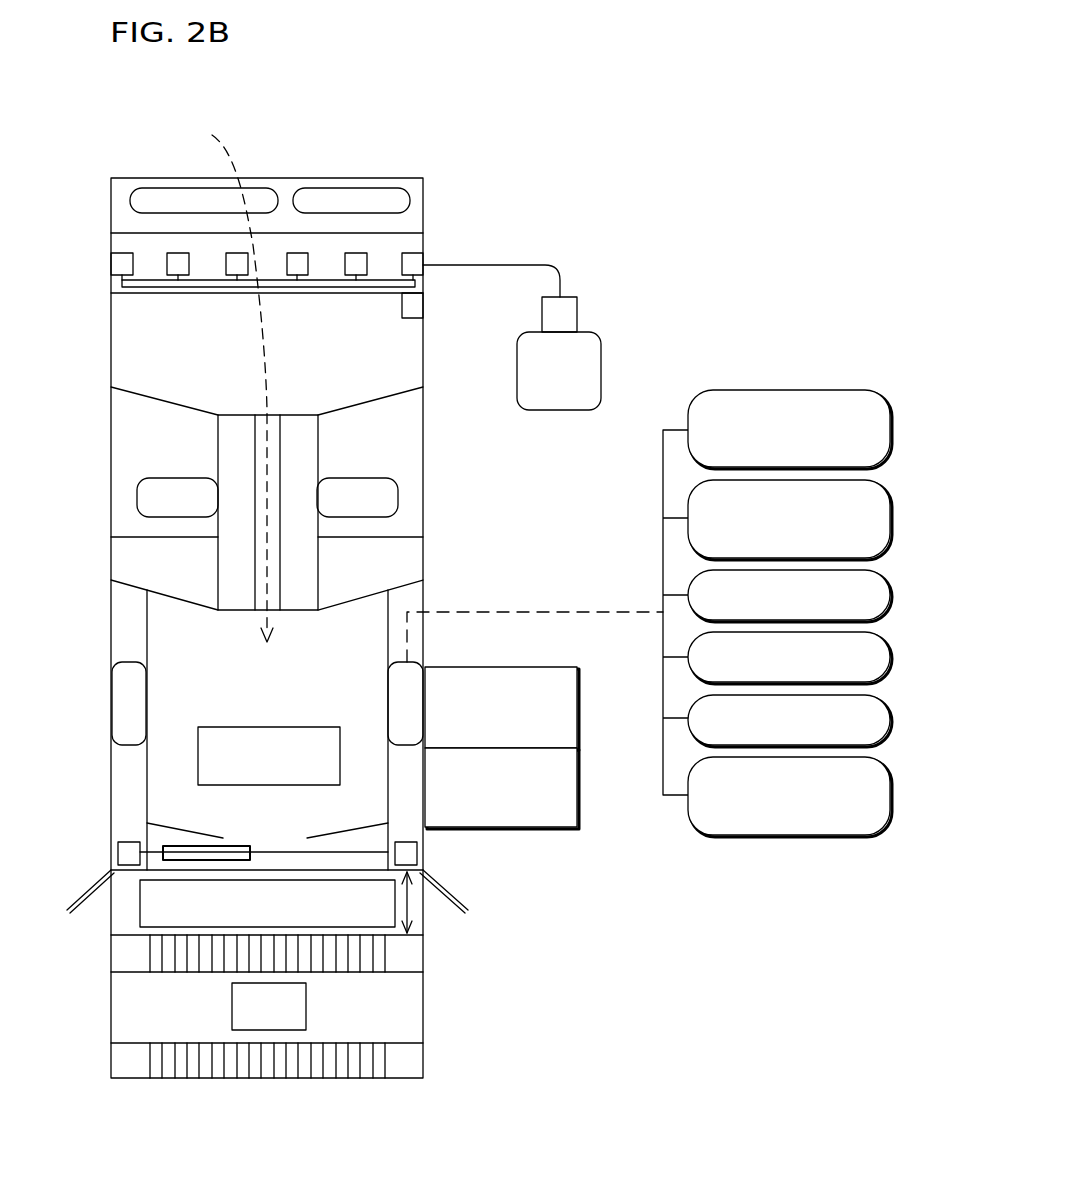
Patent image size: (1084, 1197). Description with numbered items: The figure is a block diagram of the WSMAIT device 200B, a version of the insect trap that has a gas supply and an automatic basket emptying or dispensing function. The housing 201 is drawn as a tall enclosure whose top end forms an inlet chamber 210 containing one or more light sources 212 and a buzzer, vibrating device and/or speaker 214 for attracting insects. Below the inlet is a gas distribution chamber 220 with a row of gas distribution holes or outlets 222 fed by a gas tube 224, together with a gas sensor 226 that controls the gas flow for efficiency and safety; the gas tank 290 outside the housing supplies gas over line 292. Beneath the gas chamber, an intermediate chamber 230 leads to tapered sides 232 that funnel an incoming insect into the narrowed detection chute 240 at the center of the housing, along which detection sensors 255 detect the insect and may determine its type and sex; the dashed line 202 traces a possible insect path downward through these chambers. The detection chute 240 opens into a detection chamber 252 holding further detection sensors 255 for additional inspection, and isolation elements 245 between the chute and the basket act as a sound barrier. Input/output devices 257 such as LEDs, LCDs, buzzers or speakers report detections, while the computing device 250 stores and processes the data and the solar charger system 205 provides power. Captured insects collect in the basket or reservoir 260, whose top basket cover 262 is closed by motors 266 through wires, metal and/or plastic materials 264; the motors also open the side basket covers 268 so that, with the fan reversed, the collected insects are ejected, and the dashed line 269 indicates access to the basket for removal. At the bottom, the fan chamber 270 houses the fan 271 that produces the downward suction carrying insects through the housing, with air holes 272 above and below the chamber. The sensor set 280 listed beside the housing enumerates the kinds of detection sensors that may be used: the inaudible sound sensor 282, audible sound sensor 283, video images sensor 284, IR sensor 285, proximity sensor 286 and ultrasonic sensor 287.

The WSMAIT device 200B is at (708, 112).
The housing 201 is at (120, 193).
The dashed line 202 is at (232, 147).
The inlet chamber 210 is at (283, 190).
The light source 212 is at (185, 200).
The buzzer, vibrating device and/or speaker 214 is at (398, 210).
The gas distribution chamber 220 is at (207, 258).
The gas distribution holes/outlets 222 is at (120, 265).
The gas tube 224 is at (320, 288).
The gas sensor 226 is at (412, 308).
The intermediate chamber 230 is at (202, 373).
The tapered sides 232 is at (163, 402).
The detection chute 240 is at (283, 460).
The isolation elements 245 is at (145, 562).
The computing device 250 is at (580, 713).
The solar charger system 205 is at (580, 792).
The detection chamber 252 is at (249, 704).
The detection sensors 255 is at (157, 502).
The input/output devices 257 is at (260, 786).
The basket or reservoir 260 is at (225, 908).
The top basket cover 262 is at (243, 845).
The wires, metal and/or plastic materials 264 is at (157, 860).
The motors 266 is at (128, 842).
The side basket cover 268 is at (77, 893).
The dashed line 269 is at (404, 903).
The fan chamber 270 is at (132, 1005).
The fan 271 is at (307, 1003).
The air holes 272 is at (150, 953).
The sensor set 280 is at (805, 377).
The inaudible sound sensor 282 is at (893, 428).
The audible sound sensor 283 is at (893, 518).
The video images sensor 284 is at (893, 595).
The IR sensor 285 is at (893, 657).
The proximity sensor 286 is at (893, 718).
The ultrasonic sensor 287 is at (893, 795).
The gas tank 290 is at (559, 410).
The line 292 is at (527, 265).